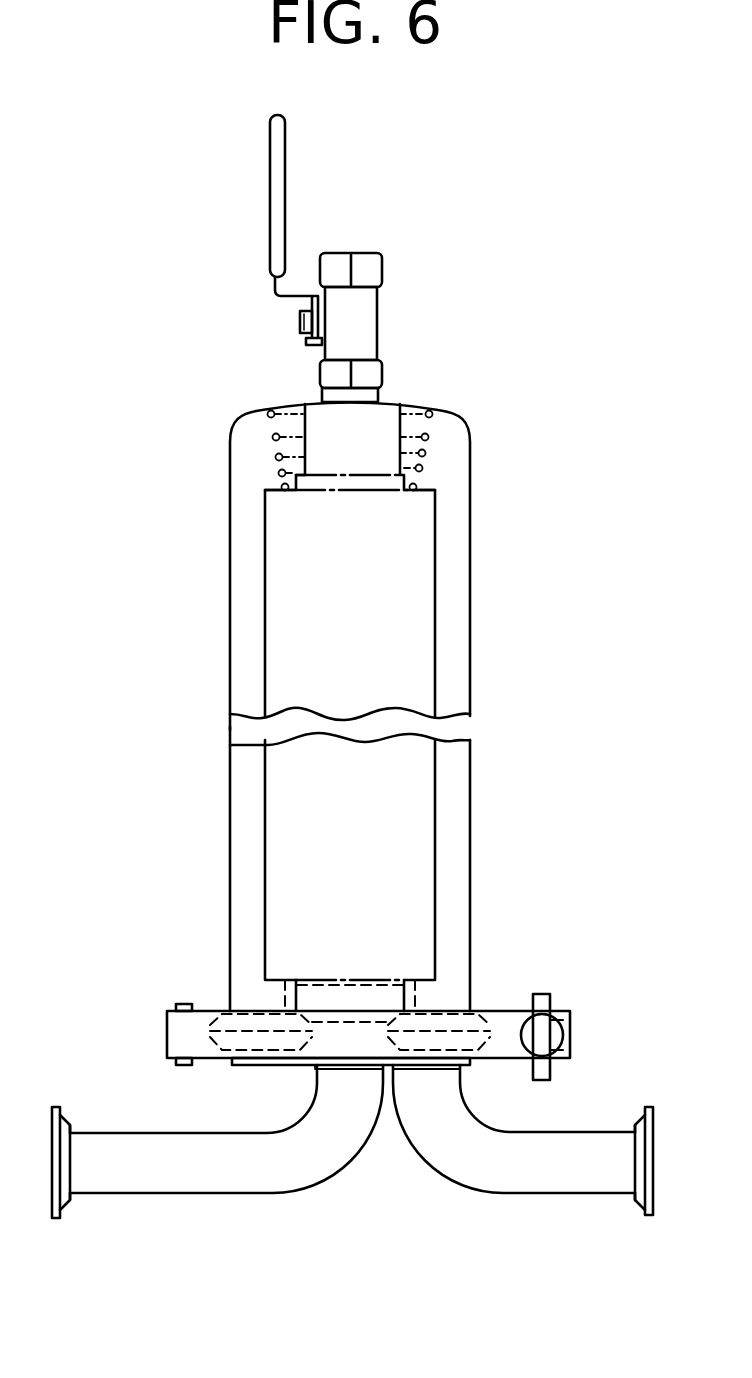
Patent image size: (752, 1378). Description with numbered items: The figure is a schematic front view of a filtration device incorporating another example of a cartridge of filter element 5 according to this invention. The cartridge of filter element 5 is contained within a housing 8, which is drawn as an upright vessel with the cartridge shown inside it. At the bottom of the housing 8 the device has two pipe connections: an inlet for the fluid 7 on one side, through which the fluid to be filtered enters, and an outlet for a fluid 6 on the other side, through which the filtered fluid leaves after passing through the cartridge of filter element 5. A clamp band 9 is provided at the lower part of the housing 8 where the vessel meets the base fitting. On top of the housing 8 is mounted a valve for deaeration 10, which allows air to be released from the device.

The cartridge of filter element 5 is at (396, 648).
The outlet for a fluid 6 is at (148, 1183).
The inlet for the fluid 7 is at (552, 1185).
The housing 8 is at (460, 856).
The clamp band 9 is at (505, 1018).
The valve for deaeration 10 is at (365, 312).